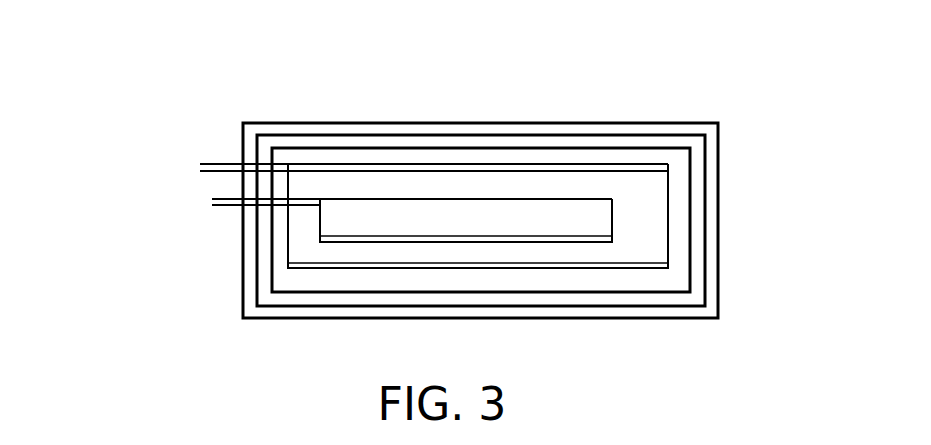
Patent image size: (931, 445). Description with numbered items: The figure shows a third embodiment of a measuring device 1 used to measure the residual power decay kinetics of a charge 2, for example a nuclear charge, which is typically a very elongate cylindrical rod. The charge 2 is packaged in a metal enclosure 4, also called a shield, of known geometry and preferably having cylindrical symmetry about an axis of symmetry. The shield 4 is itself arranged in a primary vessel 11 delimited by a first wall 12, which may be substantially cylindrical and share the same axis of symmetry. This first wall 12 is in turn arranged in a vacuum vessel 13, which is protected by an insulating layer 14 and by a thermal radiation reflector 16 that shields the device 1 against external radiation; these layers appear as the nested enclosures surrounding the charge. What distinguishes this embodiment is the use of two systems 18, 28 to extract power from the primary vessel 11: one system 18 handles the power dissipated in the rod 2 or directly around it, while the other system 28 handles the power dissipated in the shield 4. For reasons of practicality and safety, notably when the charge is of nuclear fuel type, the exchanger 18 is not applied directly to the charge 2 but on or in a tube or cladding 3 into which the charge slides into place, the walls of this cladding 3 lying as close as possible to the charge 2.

The measuring device 1 is at (170, 145).
The charge 2 is at (600, 227).
The tube or cladding 3 is at (523, 242).
The metal enclosure 4 is at (657, 252).
The primary vessel 11 is at (668, 133).
The first wall 12 is at (485, 148).
The vacuum vessel 13 is at (598, 138).
The insulating layer 14 is at (435, 135).
The thermal radiation reflector 16 is at (358, 123).
The system to extract power 18 is at (226, 216).
The system to extract power 28 is at (226, 155).